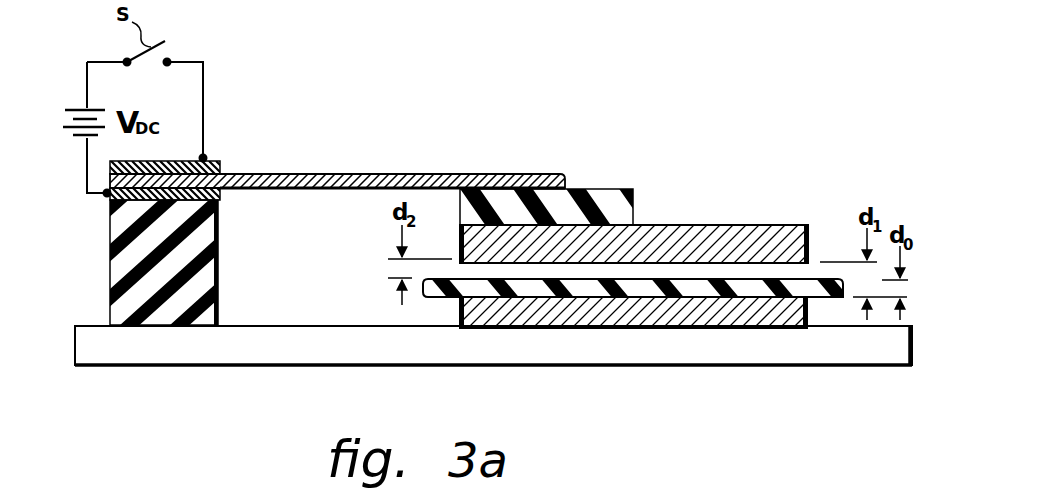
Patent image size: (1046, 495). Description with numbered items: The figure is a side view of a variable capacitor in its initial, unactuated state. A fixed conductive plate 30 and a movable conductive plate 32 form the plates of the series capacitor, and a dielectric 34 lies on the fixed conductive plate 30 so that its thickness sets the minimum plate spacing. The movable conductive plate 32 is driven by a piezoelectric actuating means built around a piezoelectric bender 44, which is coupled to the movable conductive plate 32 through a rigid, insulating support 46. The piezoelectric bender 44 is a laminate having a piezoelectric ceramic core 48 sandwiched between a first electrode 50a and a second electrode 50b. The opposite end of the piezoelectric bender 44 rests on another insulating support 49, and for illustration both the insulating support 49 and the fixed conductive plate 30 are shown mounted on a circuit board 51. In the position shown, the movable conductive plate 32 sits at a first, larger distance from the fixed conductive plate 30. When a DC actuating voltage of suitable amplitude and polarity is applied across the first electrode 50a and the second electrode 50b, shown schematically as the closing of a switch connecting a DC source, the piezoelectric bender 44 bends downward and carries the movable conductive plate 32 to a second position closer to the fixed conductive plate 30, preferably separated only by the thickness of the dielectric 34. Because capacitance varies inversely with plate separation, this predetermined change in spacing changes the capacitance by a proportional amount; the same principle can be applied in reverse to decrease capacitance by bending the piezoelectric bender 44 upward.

The conductive plate 30 is at (452, 313).
The conductive plate 32 is at (792, 226).
The dielectric 34 is at (830, 297).
The piezoelectric bender 44 is at (352, 97).
The rigid, insulating support 46 is at (636, 194).
The piezoelectric ceramic core 48 is at (503, 176).
The insulating support 49 is at (207, 302).
The first electrode 50a is at (221, 162).
The second electrode 50b is at (220, 197).
The circuit board 51 is at (157, 357).